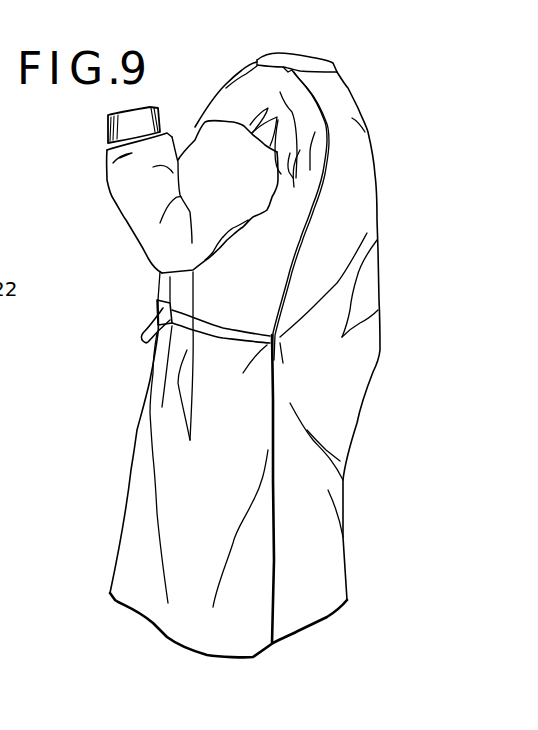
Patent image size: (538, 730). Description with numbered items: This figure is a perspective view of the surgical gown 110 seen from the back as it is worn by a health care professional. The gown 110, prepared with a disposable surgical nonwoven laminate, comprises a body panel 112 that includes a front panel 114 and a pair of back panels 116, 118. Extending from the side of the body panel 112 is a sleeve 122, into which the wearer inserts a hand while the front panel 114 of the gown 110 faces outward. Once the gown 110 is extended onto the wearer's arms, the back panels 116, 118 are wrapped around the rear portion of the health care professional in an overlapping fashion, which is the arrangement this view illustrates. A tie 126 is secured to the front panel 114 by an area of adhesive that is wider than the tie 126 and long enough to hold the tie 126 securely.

The surgical gown 110 is at (188, 501).
The body panel 112 is at (133, 460).
The front panel 114 is at (196, 125).
The back panel 116 is at (335, 222).
The back panel 118 is at (326, 150).
The sleeve 122 is at (147, 235).
The tie 126 is at (140, 333).